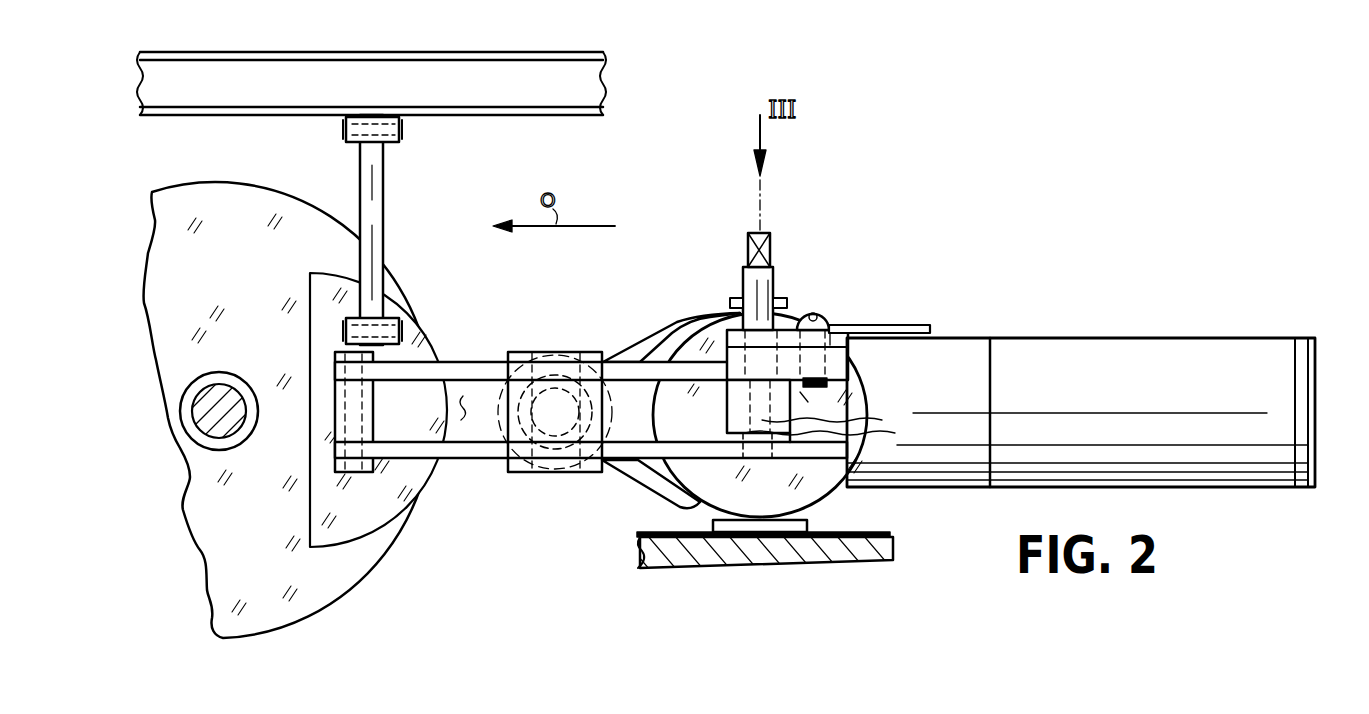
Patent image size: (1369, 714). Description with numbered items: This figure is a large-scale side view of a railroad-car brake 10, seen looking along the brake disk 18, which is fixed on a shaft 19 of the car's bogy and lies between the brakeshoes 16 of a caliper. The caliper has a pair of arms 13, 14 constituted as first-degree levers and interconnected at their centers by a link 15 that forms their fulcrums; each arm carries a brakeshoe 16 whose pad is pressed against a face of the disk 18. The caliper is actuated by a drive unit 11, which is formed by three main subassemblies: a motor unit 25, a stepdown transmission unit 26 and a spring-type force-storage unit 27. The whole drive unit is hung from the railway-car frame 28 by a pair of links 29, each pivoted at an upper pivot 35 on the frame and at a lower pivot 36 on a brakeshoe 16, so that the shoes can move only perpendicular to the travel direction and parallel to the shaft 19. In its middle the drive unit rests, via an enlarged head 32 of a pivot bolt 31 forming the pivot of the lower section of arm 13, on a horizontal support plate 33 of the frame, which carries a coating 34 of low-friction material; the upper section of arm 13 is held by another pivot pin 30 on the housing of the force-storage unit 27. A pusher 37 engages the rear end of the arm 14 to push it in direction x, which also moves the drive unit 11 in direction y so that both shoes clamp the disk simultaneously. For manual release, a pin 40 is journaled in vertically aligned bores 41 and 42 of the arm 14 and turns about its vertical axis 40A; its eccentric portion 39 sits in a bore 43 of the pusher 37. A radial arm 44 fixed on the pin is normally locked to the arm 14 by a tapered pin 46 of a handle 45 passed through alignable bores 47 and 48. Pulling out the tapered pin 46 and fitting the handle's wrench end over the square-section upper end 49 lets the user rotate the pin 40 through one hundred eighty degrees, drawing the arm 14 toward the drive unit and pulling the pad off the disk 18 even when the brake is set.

The brake 10 is at (859, 254).
The drive unit 11 is at (1099, 322).
The arm 13 is at (628, 346).
The arm 14 is at (479, 408).
The link 15 is at (512, 352).
The brakeshoe 16 is at (357, 504).
The brake disk 18 is at (251, 222).
The shaft 19 is at (232, 392).
The motor unit 25 is at (1208, 338).
The stepdown transmission unit 26 is at (946, 338).
The spring-type force-storage unit 27 is at (714, 314).
The railway-car frame 28 is at (497, 64).
The link 29 is at (384, 211).
The pivot pin 30 is at (782, 300).
The pivot bolt 31 is at (808, 522).
The enlarged head 32 is at (786, 523).
The horizontal support plate 33 is at (880, 561).
The coating 34 is at (888, 534).
The upper pivot 35 is at (354, 141).
The pivot 36 is at (398, 320).
The pusher 37 is at (740, 406).
The eccentric portion 39 is at (855, 437).
The pin 40 is at (743, 285).
The axis 40A is at (758, 194).
The bore 41 is at (811, 390).
The bore 42 is at (748, 442).
The bore 43 is at (862, 421).
The arm 44 is at (787, 340).
The handle 45 is at (858, 326).
The tapered pin 46 is at (820, 325).
The bore 47 is at (847, 345).
The bore 48 is at (864, 376).
The square-section upper end 49 is at (771, 250).